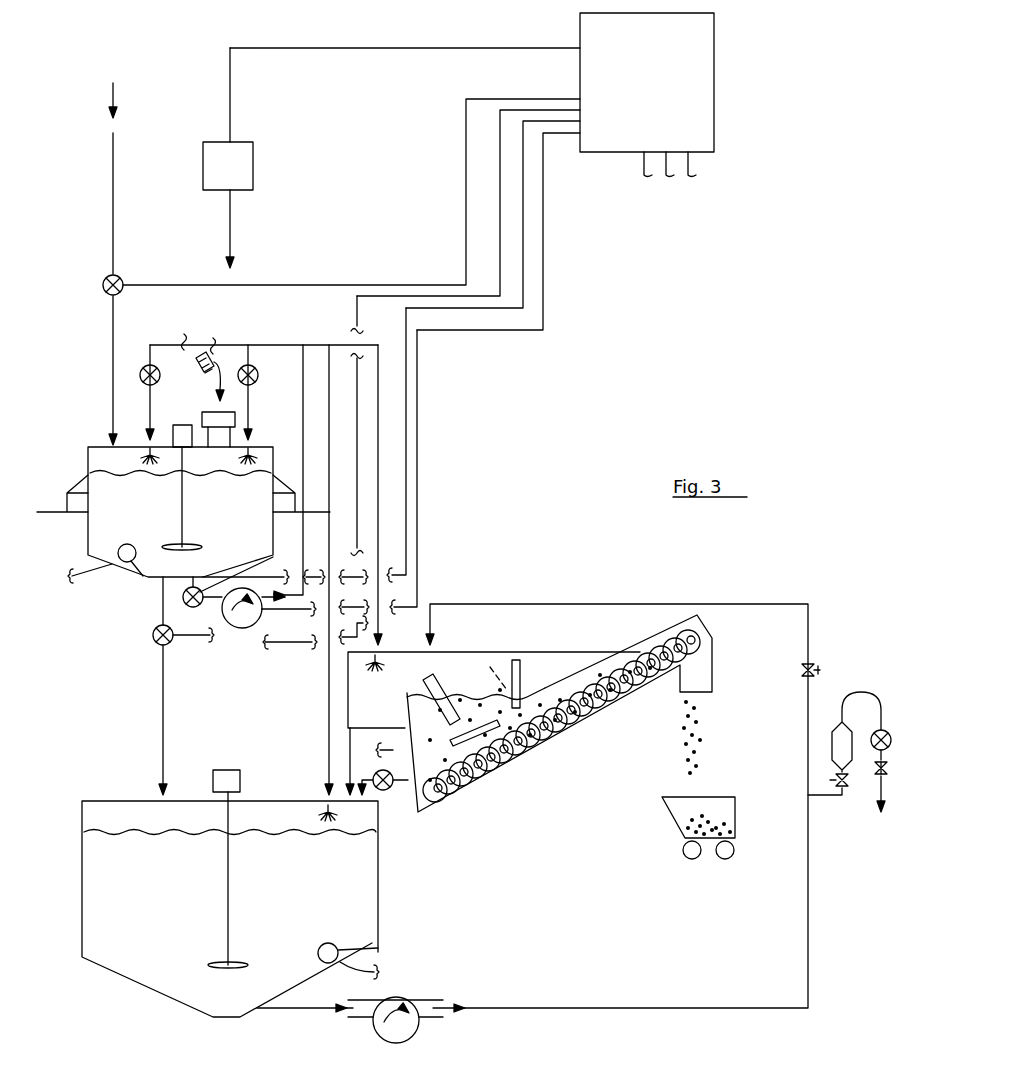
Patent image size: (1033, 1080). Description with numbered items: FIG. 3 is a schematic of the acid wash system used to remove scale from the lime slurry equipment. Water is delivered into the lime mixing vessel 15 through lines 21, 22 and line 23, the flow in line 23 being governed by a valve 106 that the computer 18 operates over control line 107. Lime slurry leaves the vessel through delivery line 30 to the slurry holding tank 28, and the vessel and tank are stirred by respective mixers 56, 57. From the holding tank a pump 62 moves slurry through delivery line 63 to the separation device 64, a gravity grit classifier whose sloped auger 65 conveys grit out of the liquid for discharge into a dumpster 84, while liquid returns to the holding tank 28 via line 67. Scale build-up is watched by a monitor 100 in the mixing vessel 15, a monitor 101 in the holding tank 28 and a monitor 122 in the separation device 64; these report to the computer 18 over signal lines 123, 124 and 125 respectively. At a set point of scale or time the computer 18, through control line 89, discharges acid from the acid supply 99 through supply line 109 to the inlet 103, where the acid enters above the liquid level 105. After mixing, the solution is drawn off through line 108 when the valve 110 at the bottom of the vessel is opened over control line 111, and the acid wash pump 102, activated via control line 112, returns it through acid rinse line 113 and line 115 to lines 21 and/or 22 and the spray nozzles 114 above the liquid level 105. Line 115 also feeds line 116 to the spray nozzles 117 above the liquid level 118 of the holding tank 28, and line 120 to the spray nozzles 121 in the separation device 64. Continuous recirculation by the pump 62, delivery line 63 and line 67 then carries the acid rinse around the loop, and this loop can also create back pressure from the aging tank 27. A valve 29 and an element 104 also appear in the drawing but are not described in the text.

The lime mixing vessel 15 is at (262, 447).
The computer 18 is at (714, 95).
The line 21 is at (250, 406).
The line 22 is at (152, 406).
The line 23 is at (113, 402).
The aging tank 27 is at (113, 219).
The slurry holding tank 28 is at (178, 801).
The valve 29 is at (153, 636).
The delivery line 30 is at (163, 708).
The mixer 56 is at (190, 541).
The mixer 57 is at (240, 960).
The pump 62 is at (405, 998).
The delivery line 63 is at (735, 1008).
The separation device 64 is at (463, 652).
The auger 65 is at (548, 750).
The line 67 is at (346, 745).
The dumpster 84 is at (720, 797).
The control line 89 is at (410, 48).
The acid supply 99 is at (253, 155).
The monitor 100 is at (140, 573).
The monitor 101 is at (372, 943).
The acid wash pump 102 is at (240, 628).
The inlet 103 is at (227, 412).
The sensor 104 is at (198, 367).
The liquid level 105 is at (214, 478).
The valve 106 is at (124, 278).
The control line 107 is at (250, 285).
The line 108 is at (200, 588).
The supply line 109 is at (230, 232).
The valve 110 is at (190, 606).
The control line 111 is at (406, 543).
The control line 112 is at (417, 592).
The acid rinse line 113 is at (303, 463).
The spray nozzles 114 is at (158, 466).
The line 115 is at (290, 345).
The line 116 is at (330, 503).
The spray nozzles 117 is at (325, 805).
The liquid level 118 is at (165, 832).
The line 120 is at (378, 413).
The spray nozzles 121 is at (384, 665).
The monitor 122 is at (392, 790).
The signal line 123 is at (690, 166).
The signal line 124 is at (668, 178).
The signal line 125 is at (646, 174).